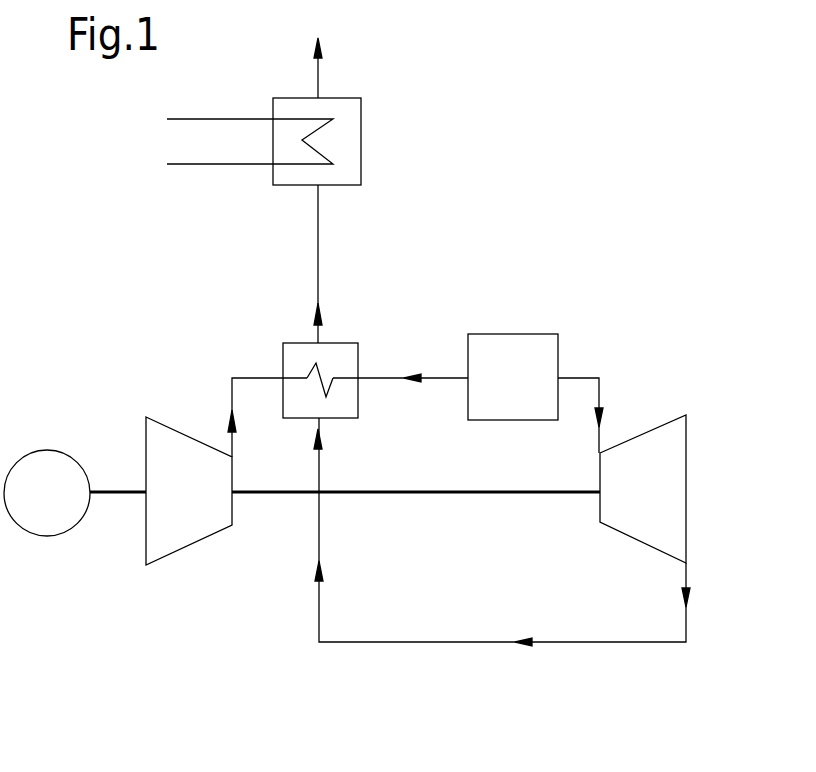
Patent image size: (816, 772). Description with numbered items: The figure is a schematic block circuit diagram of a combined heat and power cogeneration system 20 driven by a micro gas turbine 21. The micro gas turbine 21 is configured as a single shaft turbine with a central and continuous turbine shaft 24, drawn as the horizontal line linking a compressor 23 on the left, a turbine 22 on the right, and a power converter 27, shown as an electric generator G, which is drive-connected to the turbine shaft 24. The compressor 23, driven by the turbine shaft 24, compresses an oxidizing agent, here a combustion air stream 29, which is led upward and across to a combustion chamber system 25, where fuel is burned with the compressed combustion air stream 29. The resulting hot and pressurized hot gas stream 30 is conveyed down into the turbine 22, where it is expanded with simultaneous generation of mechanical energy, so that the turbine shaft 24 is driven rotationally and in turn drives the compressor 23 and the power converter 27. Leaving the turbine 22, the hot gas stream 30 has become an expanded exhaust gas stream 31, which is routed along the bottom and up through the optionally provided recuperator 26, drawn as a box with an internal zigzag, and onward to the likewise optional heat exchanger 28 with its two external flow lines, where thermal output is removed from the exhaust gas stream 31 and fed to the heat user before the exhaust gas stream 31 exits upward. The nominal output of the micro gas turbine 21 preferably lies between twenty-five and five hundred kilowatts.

The combined heat and power cogeneration system 20 is at (137, 243).
The micro gas turbine 21 is at (186, 593).
The turbine 22 is at (658, 501).
The compressor 23 is at (198, 505).
The turbine shaft 24 is at (440, 496).
The combustion chamber system 25 is at (530, 389).
The recuperator 26 is at (282, 360).
The power converter 27 is at (44, 538).
The heat exchanger 28 is at (338, 141).
The combustion air stream 29 is at (228, 433).
The hot gas stream 30 is at (601, 396).
The exhaust gas stream 31 is at (318, 247).